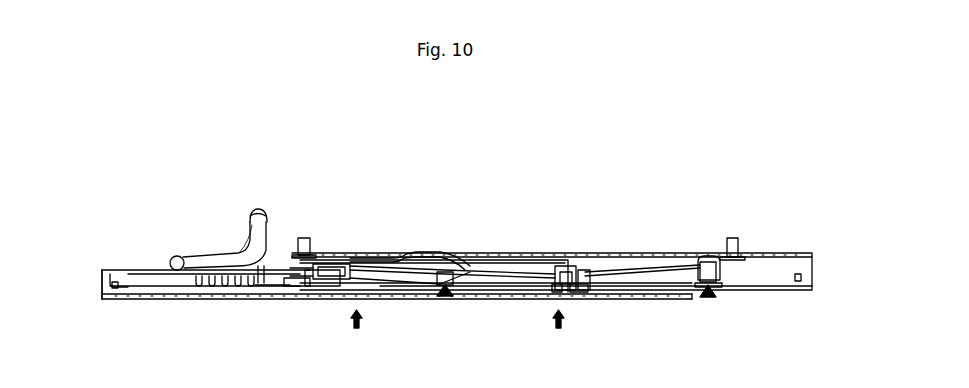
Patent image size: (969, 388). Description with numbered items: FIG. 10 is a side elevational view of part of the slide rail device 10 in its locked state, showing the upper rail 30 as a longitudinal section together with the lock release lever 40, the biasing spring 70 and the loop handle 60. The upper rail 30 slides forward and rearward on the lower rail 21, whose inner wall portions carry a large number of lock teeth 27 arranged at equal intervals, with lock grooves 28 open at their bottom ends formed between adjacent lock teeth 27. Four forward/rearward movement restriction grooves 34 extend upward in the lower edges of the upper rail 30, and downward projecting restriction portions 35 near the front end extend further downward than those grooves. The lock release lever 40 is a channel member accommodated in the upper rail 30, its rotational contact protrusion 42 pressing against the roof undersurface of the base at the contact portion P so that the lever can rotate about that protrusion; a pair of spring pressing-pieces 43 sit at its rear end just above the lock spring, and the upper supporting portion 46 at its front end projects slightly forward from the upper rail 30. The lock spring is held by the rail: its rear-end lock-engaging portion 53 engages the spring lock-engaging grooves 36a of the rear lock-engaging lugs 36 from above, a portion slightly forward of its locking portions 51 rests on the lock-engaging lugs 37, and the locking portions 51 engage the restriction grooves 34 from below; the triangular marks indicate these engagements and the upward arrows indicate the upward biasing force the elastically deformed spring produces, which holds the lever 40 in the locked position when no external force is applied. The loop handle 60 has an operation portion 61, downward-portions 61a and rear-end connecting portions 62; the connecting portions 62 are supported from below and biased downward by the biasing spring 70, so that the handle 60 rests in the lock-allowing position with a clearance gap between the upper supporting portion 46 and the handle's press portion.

The slide rail device 10 is at (160, 178).
The lower rail 21 is at (143, 300).
The lock teeth 27 is at (253, 292).
The lock grooves 28 is at (211, 292).
The upper rail 30 is at (786, 255).
The forward/rearward movement restriction grooves 34 is at (584, 292).
The downward projecting restriction portions 35 is at (556, 292).
The lock-engaging lugs 36 is at (720, 280).
The spring lock-engaging grooves 36a is at (708, 262).
The lock-engaging lugs 37 is at (449, 270).
The lock release lever 40 is at (370, 263).
The rotational contact protrusion 42 is at (395, 263).
The spring pressing-pieces 43 is at (563, 268).
The upper supporting portion 46 is at (286, 257).
The locking portions 51 is at (584, 270).
The rear-end lock-engaging portion 53 is at (703, 272).
The loop handle 60 is at (196, 256).
The operation portion 61 is at (170, 259).
The downward-portions 61a is at (276, 262).
The rear-end connecting portions 62 is at (298, 283).
The biasing spring 70 is at (341, 263).